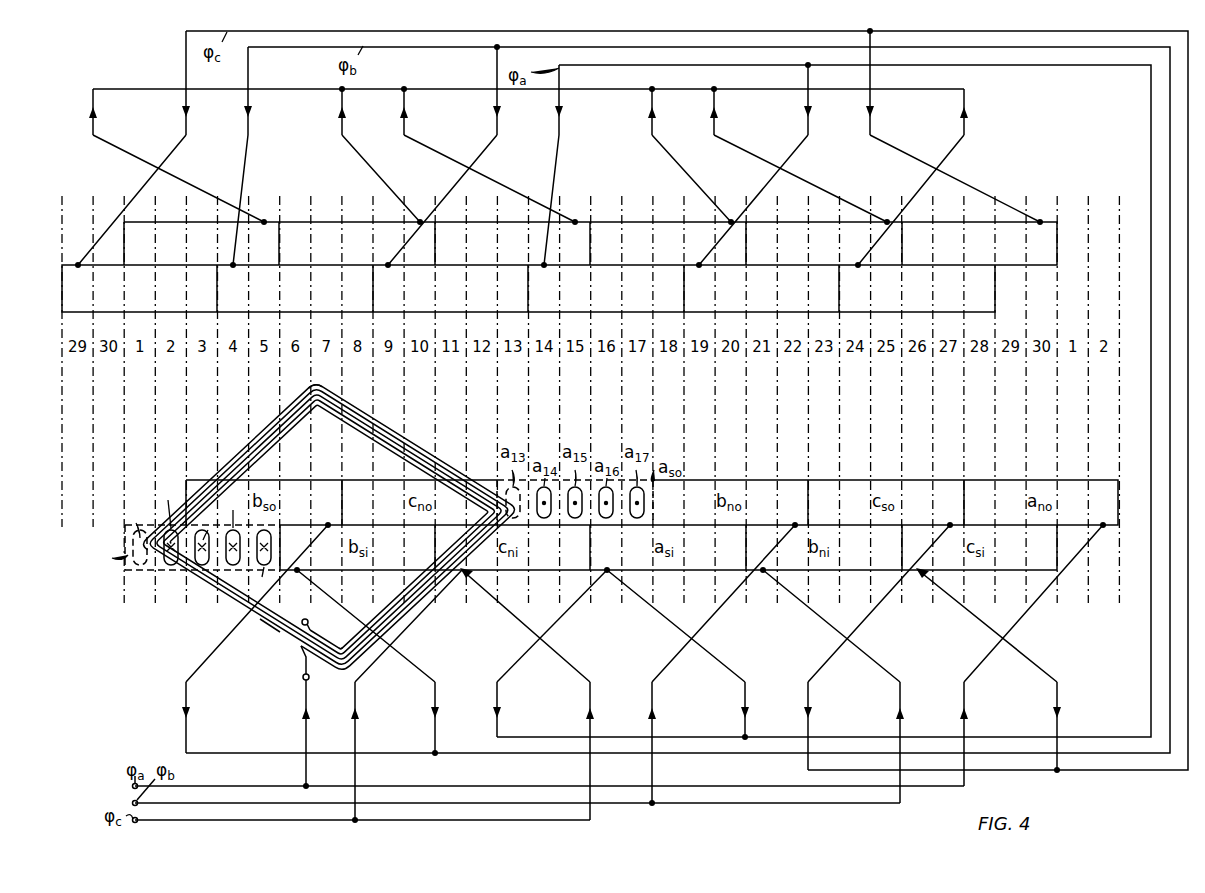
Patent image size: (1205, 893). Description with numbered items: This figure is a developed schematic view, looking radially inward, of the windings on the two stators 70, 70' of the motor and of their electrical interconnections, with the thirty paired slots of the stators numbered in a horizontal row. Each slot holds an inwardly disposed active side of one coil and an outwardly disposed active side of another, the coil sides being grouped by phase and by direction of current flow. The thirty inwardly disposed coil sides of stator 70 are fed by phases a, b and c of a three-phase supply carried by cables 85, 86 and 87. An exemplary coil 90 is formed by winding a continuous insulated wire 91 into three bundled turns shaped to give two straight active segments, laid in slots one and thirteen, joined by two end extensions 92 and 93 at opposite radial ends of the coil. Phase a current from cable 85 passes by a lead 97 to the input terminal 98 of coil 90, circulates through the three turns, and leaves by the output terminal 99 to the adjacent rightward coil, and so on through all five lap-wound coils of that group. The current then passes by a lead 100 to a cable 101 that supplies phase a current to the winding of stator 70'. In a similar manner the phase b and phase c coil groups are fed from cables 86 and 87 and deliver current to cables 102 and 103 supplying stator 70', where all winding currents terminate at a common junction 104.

The stator 70 is at (186, 527).
The stator 70' is at (561, 272).
The cable 85 is at (236, 785).
The cable 86 is at (229, 802).
The cable 87 is at (213, 818).
The coil 90 is at (329, 540).
The insulated wire 91 is at (266, 638).
The end extension 92 is at (340, 650).
The end extension 93 is at (319, 396).
The lead 97 is at (304, 740).
The input terminal 98 is at (302, 679).
The output terminal 99 is at (308, 619).
The lead 100 is at (557, 615).
The cable 101 is at (988, 67).
The cable 102 is at (1040, 50).
The cable 103 is at (1090, 33).
The common junction 104 is at (452, 80).